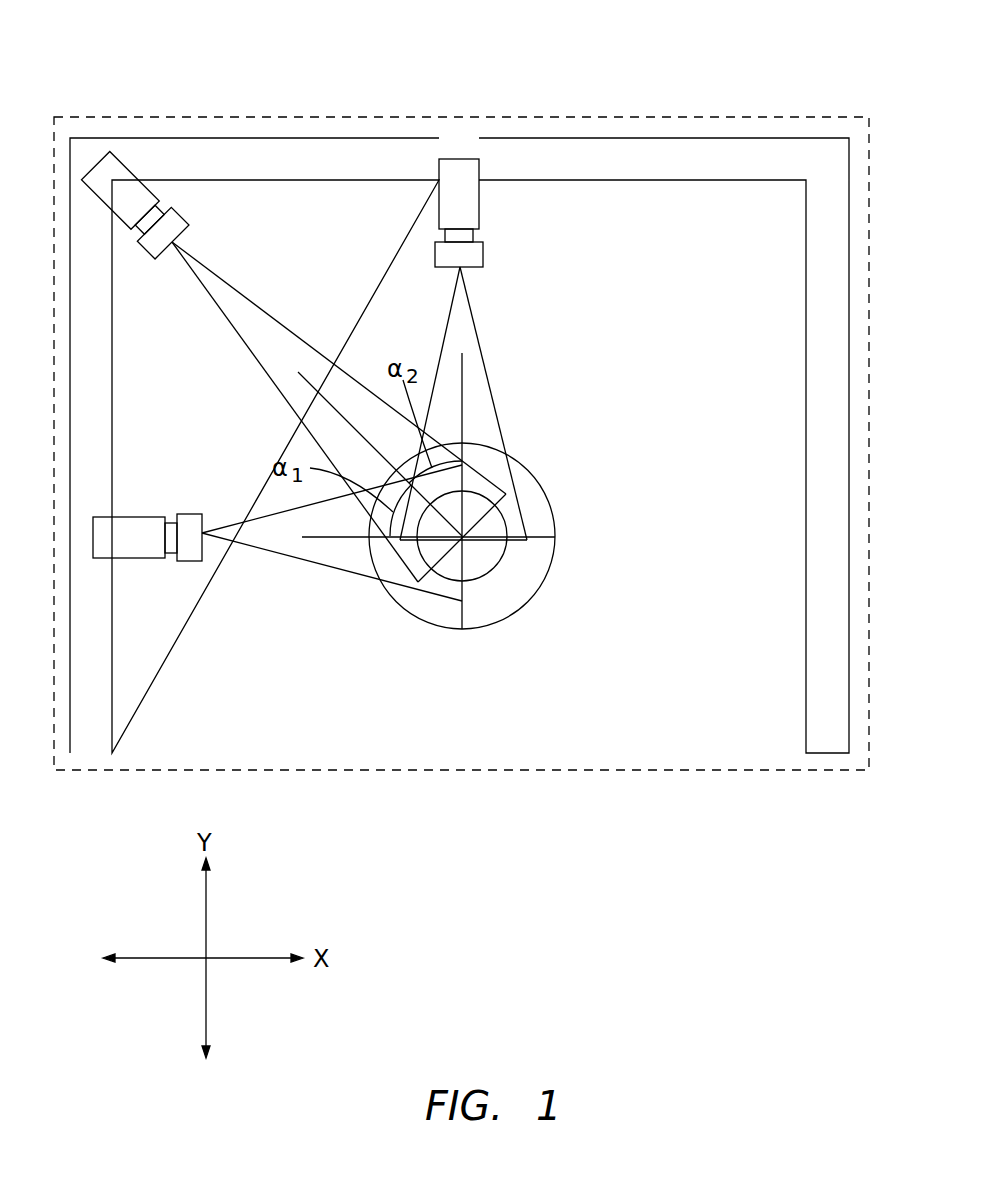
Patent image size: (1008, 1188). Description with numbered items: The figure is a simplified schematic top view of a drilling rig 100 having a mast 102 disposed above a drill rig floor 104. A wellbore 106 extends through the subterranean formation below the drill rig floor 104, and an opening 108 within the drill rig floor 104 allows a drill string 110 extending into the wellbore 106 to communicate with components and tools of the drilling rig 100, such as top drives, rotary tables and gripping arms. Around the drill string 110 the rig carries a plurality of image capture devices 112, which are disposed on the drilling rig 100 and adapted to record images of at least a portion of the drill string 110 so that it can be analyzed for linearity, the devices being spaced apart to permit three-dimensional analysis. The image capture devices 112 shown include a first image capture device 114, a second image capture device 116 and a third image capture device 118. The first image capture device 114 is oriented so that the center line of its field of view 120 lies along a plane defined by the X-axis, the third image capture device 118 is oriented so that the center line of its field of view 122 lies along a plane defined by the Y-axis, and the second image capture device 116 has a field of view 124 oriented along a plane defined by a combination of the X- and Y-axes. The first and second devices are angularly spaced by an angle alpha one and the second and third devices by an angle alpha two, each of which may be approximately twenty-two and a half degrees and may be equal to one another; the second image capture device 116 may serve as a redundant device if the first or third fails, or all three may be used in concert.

The drilling rig 100 is at (703, 58).
The mast 102 is at (801, 380).
The drill rig floor 104 is at (673, 753).
The wellbore 106 is at (522, 575).
The opening 108 is at (535, 470).
The drill string 110 is at (442, 570).
The image capture devices 112 is at (277, 349).
The first image capture device 114 is at (132, 560).
The second image capture device 116 is at (85, 162).
The third image capture device 118 is at (450, 159).
The field of view 120 is at (293, 550).
The field of view 122 is at (476, 330).
The field of view 124 is at (285, 345).